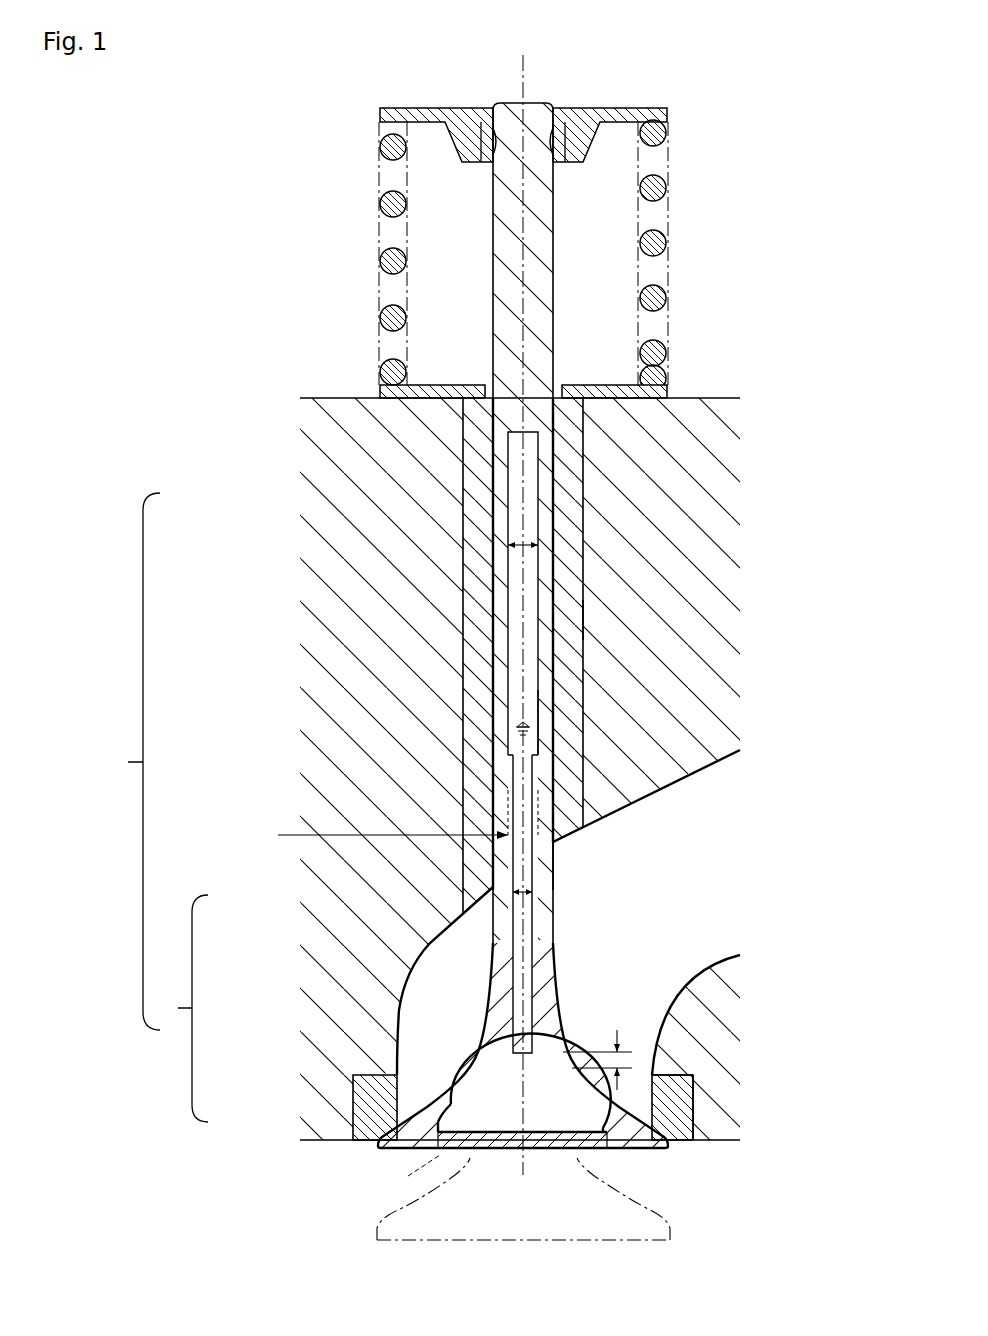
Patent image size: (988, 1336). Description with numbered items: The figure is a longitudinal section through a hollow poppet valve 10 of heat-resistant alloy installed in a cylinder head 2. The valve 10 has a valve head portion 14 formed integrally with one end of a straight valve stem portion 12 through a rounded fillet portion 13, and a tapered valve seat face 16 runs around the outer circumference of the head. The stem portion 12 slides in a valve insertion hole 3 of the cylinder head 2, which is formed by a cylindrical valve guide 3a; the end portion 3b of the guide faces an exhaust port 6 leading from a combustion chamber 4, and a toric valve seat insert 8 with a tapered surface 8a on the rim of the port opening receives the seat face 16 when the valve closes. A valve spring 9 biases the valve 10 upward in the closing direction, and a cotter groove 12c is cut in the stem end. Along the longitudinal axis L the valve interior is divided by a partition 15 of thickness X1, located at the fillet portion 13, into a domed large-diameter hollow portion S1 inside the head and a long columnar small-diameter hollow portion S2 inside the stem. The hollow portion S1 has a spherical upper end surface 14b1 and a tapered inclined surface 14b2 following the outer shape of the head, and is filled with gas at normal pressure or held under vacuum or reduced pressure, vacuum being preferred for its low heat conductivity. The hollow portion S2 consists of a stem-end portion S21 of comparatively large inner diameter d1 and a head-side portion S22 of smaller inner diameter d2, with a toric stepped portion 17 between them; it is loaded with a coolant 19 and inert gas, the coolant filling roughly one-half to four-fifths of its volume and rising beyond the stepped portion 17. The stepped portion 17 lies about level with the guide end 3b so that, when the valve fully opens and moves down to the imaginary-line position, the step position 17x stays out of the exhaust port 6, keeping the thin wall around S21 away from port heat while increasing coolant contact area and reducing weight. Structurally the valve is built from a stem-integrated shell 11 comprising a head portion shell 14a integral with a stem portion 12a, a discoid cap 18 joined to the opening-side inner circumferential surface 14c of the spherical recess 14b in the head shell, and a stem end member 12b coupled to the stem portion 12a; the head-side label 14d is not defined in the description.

The valve axis L is at (526, 92).
The cylinder head 2 is at (649, 489).
The valve insertion hole 3 is at (555, 662).
The valve guide 3a is at (583, 622).
The valve guide lower end 3b is at (570, 838).
The combustion chamber 4 is at (712, 1217).
The exhaust port 6 is at (636, 934).
The valve seat insert 8 is at (682, 1145).
The tapered surface 8a is at (650, 1147).
The valve spring 9 is at (378, 233).
The hollow poppet valve 10 is at (127, 761).
The stem-integrated shell 11 is at (178, 1008).
The valve stem portion 12 is at (415, 508).
The stem portion of the shell 12a is at (527, 945).
The stem end member 12b is at (493, 345).
The cotter groove 12c is at (548, 136).
The fillet portion 13 is at (470, 1060).
The valve head portion 14 is at (435, 1118).
The head portion shell 14a is at (403, 1127).
The spherical recess 14b is at (497, 1212).
The spherical upper end surface 14b1 is at (493, 1150).
The tapered outer circumferential surface 14b2 is at (464, 1096).
The opening-side inner circumferential surface 14c is at (345, 1147).
The head outer surface 14d is at (432, 1104).
The partition 15 is at (545, 1140).
The valve seat face 16 is at (695, 1128).
The stepped portion 17 is at (507, 746).
The position of the stepped portion at full valve opening 17x is at (367, 833).
The discoid cap 18 is at (595, 1150).
The coolant 19 is at (537, 708).
The large-diameter hollow portion S1 is at (552, 1086).
The small-diameter hollow portion S2 is at (676, 742).
The large-inner-diameter small-diameter hollow portion S21 is at (535, 516).
The small-inner-diameter small-diameter hollow portion S22 is at (531, 945).
The inner diameter of hollow portion S21 d1 is at (523, 546).
The inner diameter of hollow portion S22 d2 is at (527, 896).
The partition thickness X1 is at (599, 1047).